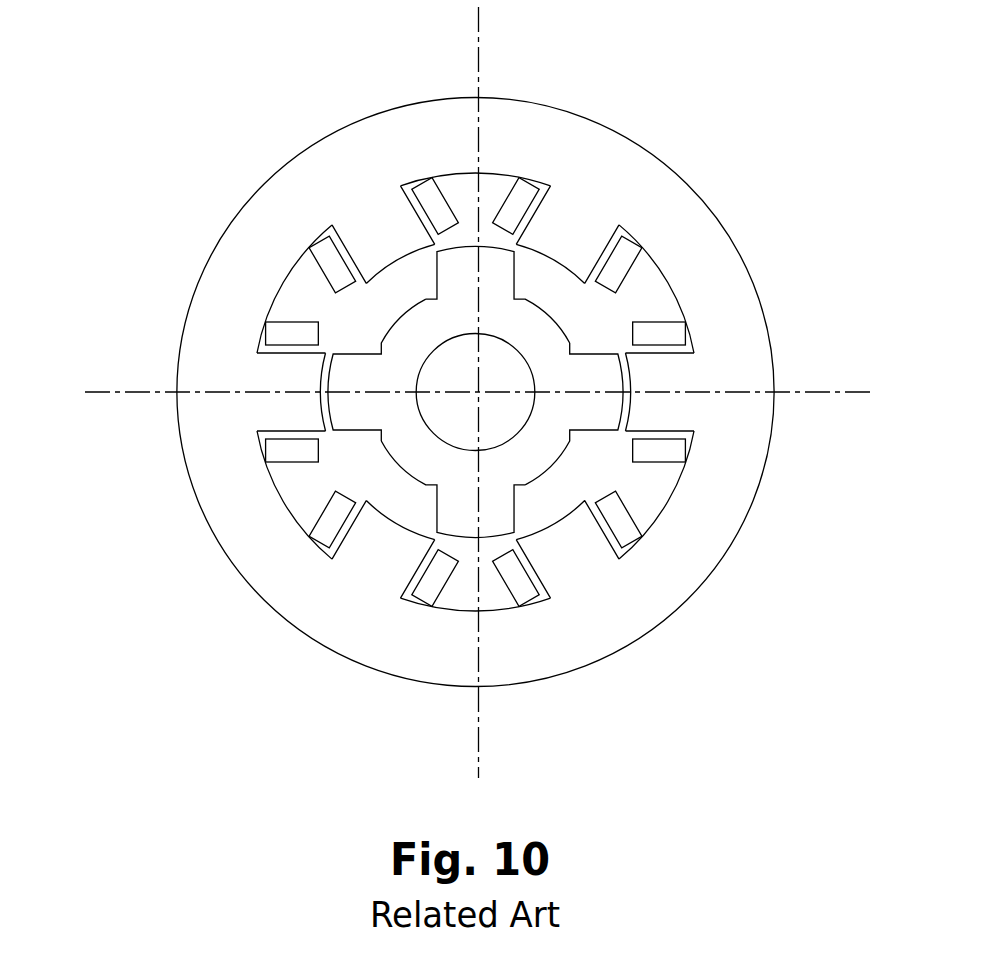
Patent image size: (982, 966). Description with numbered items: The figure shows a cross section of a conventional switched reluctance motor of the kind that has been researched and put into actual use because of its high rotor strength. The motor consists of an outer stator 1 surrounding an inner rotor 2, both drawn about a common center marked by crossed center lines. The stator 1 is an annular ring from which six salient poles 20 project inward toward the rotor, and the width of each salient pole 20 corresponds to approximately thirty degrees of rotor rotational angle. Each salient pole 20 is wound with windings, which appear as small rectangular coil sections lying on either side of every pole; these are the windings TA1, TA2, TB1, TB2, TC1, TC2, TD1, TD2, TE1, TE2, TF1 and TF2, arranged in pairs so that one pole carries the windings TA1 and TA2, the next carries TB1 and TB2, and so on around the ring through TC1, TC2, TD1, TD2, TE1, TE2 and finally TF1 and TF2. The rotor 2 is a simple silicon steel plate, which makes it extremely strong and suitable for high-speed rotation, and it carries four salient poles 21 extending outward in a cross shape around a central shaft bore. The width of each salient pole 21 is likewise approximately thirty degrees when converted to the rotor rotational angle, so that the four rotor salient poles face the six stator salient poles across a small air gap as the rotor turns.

The stator 1 is at (535, 392).
The rotor 2 is at (367, 329).
The salient pole 20 is at (655, 373).
The salient pole 21 is at (349, 373).
The winding TA1 is at (677, 338).
The winding TA2 is at (677, 458).
The winding TB1 is at (523, 192).
The winding TB2 is at (628, 247).
The winding TC1 is at (325, 253).
The winding TC2 is at (432, 193).
The winding TD1 is at (273, 453).
The winding TD2 is at (273, 335).
The winding TE1 is at (428, 592).
The winding TE2 is at (314, 534).
The winding TF1 is at (620, 528).
The winding TF2 is at (520, 593).